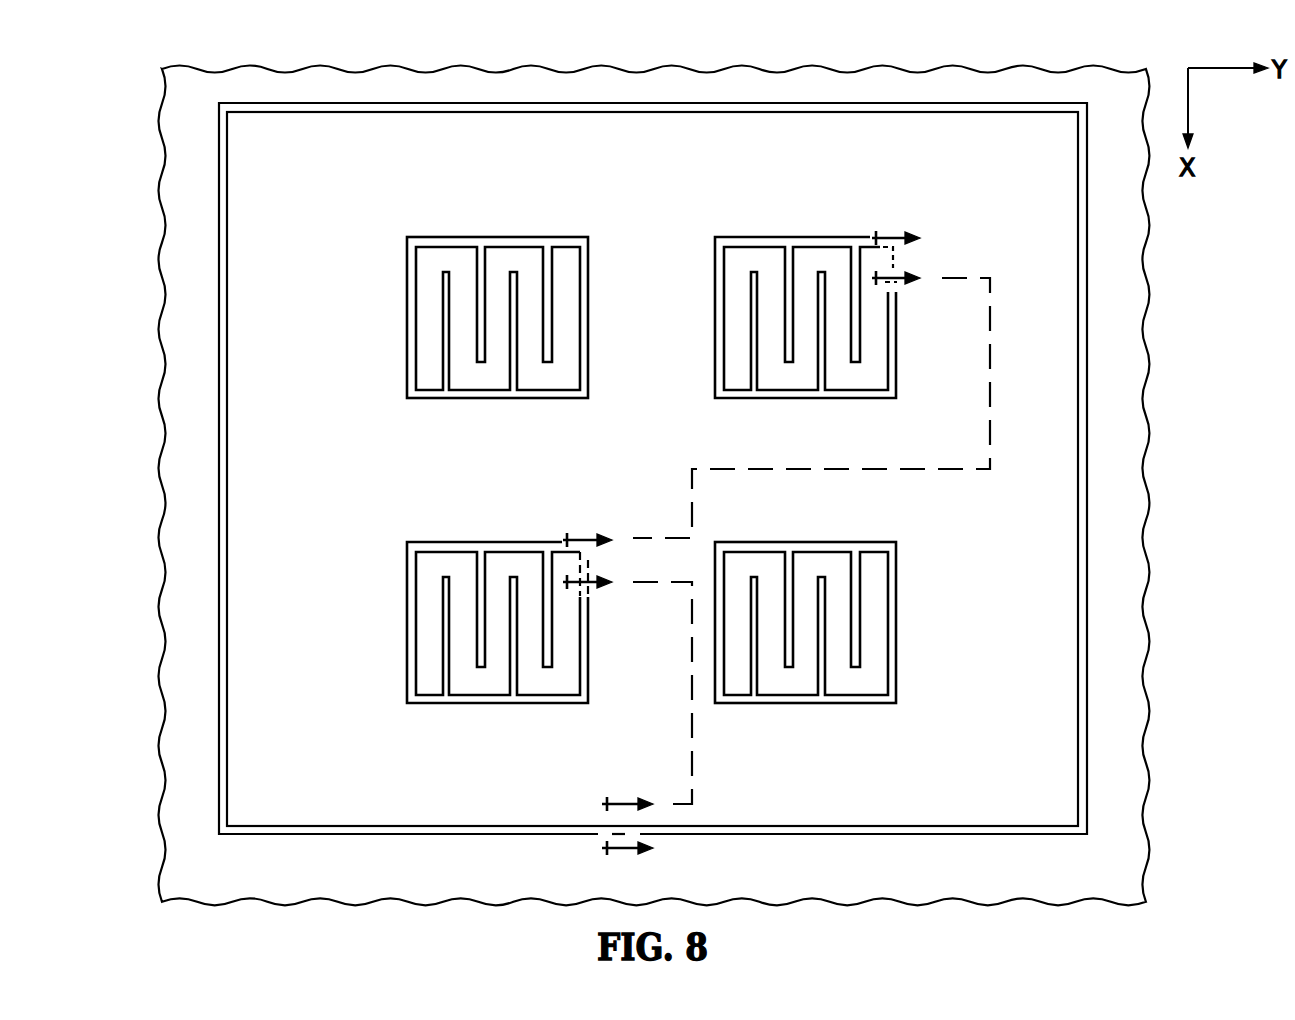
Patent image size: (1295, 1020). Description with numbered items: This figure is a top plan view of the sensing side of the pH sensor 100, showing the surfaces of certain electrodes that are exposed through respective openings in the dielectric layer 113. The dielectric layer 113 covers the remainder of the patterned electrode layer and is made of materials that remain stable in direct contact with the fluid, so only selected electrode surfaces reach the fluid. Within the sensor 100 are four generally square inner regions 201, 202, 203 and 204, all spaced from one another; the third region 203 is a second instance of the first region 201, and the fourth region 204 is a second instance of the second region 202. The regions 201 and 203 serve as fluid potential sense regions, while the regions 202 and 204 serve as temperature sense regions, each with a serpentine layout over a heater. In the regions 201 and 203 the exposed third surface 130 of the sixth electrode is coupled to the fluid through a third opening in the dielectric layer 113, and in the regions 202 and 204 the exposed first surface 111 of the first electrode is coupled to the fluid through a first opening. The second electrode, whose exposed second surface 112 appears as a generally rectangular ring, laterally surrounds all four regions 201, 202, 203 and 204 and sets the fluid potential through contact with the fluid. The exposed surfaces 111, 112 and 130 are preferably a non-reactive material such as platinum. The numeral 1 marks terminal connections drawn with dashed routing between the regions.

The sensor 100 is at (96, 90).
The dielectric layer 113 is at (663, 183).
The second surface 112 is at (533, 827).
The third surface 130 is at (407, 318).
The first surface 111 is at (715, 318).
The first region 201 is at (384, 206).
The second region 202 is at (834, 206).
The third region 203 is at (382, 503).
The fourth region 204 is at (896, 732).
The terminal connection 1 is at (776, 544).